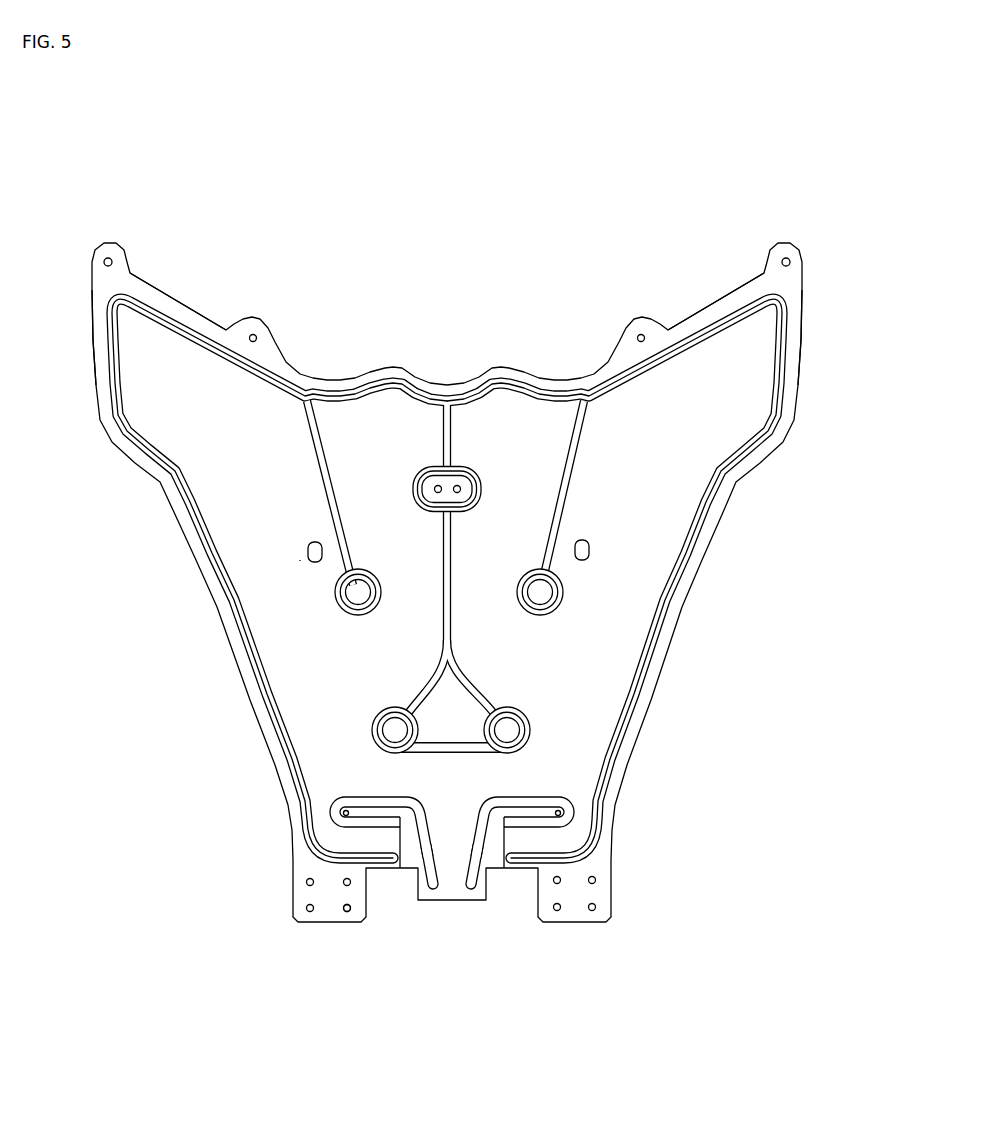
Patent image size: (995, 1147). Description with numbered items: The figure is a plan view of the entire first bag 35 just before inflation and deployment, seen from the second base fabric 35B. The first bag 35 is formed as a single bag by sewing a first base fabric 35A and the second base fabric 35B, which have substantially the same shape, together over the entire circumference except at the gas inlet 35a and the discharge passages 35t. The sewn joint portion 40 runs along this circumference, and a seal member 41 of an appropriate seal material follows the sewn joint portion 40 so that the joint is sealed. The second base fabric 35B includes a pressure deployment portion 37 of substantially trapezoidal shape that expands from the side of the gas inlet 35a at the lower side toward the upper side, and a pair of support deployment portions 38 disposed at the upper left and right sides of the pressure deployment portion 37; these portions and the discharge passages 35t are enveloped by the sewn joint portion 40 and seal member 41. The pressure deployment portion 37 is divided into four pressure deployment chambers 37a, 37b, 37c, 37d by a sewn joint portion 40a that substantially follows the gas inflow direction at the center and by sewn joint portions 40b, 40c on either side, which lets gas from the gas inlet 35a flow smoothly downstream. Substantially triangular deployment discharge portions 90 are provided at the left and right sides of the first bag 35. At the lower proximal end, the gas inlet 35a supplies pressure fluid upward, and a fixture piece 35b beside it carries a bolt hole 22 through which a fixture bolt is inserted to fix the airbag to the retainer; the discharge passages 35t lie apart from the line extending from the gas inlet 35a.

The first bag 35 is at (447, 571).
The first base fabric 35A is at (180, 244).
The second base fabric 35B is at (124, 290).
The deployment discharge portion 90 is at (173, 300).
The pressure deployment portion 37 is at (458, 524).
The pressure deployment chamber 37a is at (282, 500).
The pressure deployment chamber 37b is at (377, 425).
The pressure deployment chamber 37c is at (512, 430).
The pressure deployment chamber 37d is at (615, 497).
The support deployment portion 38 is at (172, 372).
The sewn joint portion 40 is at (447, 591).
The sewn joint portion 40a is at (451, 558).
The sewn joint portion 40b is at (330, 493).
The sewn joint portion 40c is at (564, 488).
The seal member 41 is at (247, 663).
The gas inlet 35a is at (449, 868).
The fixture piece 35b is at (300, 897).
The discharge passage 35t is at (382, 845).
The bolt hole 22 is at (345, 912).